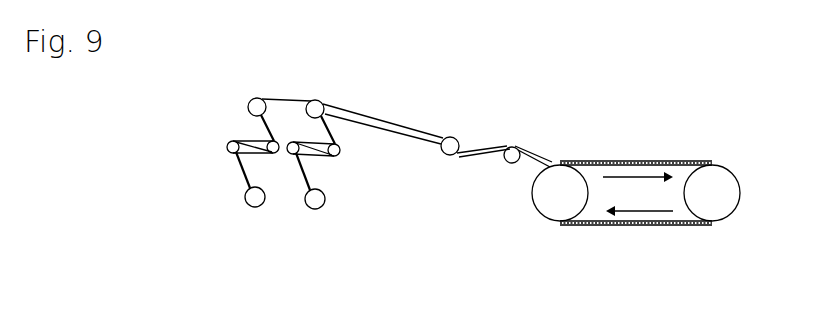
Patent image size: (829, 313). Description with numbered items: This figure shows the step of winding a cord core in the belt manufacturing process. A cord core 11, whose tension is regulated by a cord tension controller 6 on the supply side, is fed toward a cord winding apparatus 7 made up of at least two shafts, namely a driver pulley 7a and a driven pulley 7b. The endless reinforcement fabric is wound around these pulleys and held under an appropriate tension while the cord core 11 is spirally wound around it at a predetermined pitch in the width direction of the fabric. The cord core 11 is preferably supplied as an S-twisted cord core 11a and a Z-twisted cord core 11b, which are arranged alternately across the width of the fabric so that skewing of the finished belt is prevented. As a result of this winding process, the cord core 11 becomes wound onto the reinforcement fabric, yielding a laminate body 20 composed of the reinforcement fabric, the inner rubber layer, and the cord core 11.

The cord tension controller 6 is at (228, 123).
The cord winding apparatus 7 is at (735, 147).
The driver pulley 7a is at (552, 207).
The driven pulley 7b is at (718, 207).
The cord core 11 is at (318, 238).
The S-twisted cord core 11a is at (243, 170).
The Z-twisted cord core 11b is at (301, 170).
The laminate body 20 is at (633, 226).